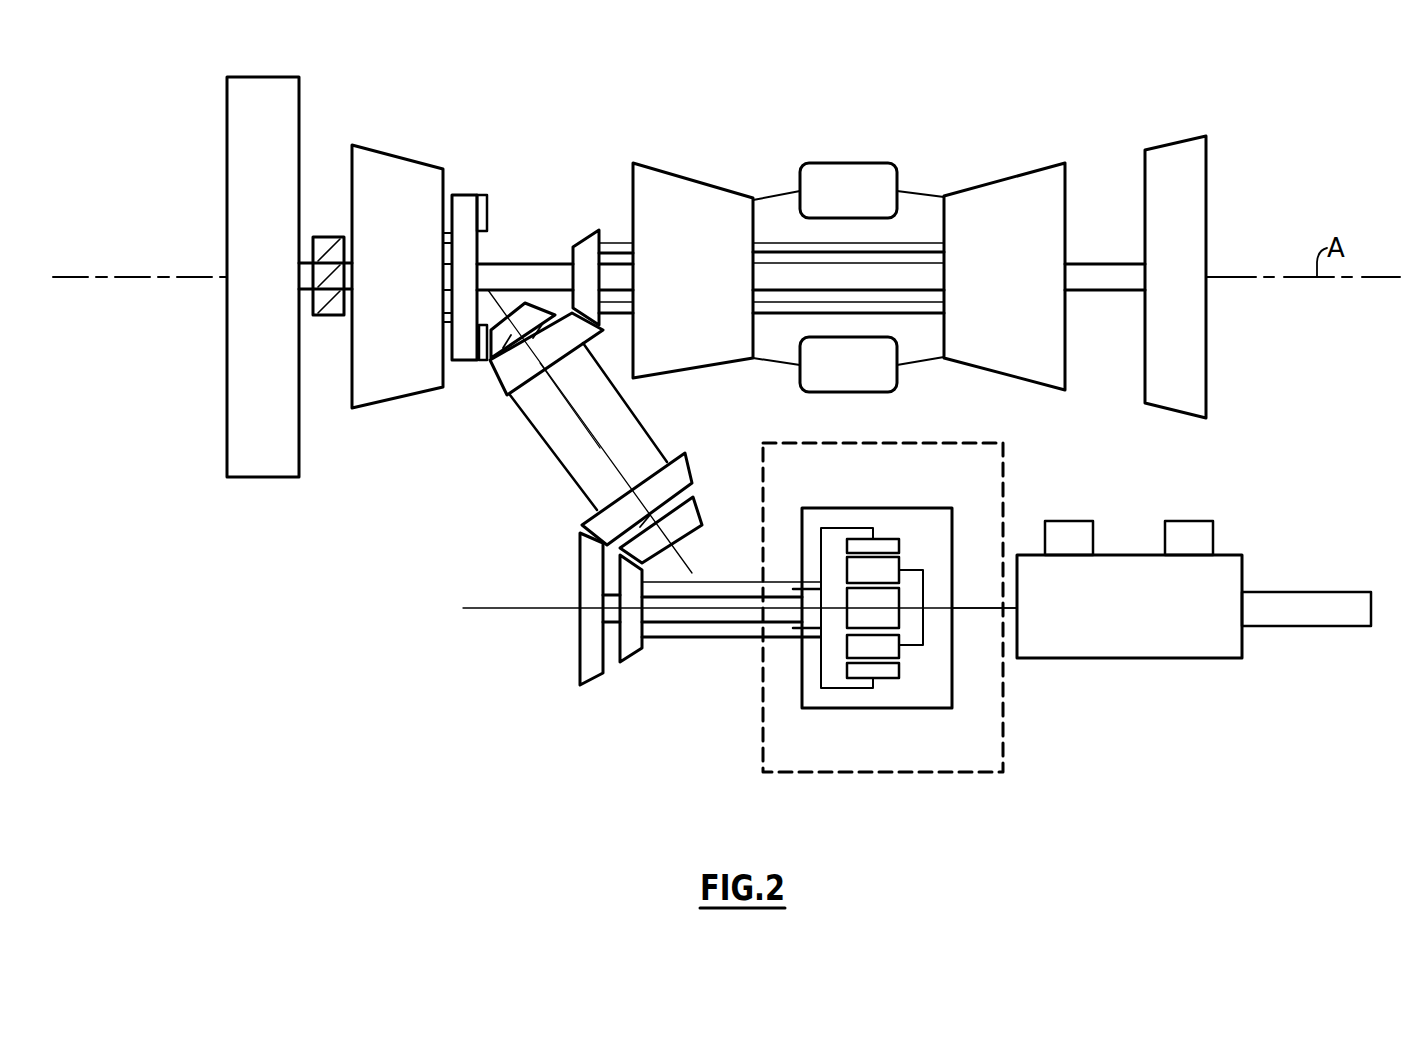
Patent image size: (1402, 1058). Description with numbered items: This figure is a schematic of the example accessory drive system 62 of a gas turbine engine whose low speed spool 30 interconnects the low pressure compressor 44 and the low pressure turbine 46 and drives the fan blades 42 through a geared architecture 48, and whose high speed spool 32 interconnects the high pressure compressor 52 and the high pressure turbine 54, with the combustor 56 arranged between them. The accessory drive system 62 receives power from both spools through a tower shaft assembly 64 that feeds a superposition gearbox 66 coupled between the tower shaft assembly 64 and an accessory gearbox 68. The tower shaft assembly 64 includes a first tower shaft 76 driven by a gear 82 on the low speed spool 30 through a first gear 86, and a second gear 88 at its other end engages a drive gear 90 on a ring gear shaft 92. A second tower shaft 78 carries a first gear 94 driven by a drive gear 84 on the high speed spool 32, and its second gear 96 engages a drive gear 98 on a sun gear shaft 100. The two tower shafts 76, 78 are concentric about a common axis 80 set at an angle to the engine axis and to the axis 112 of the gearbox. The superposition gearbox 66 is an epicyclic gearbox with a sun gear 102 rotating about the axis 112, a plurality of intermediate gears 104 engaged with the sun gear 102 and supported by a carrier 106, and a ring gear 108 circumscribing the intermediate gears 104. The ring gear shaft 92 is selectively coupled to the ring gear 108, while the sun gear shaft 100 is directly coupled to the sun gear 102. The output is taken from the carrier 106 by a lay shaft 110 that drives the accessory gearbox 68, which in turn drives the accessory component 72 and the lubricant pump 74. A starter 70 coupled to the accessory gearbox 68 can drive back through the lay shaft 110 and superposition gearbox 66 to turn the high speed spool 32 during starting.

The low speed spool 30 is at (508, 270).
The high speed spool 32 is at (787, 315).
The fan blades 42 is at (269, 87).
The low pressure compressor 44 is at (392, 163).
The low pressure turbine 46 is at (1172, 150).
The geared architecture 48 is at (326, 236).
The high pressure compressor 52 is at (675, 186).
The high pressure turbine 54 is at (994, 190).
The combustor 56 is at (837, 170).
The accessory drive system 62 is at (625, 734).
The tower shaft assembly 64 is at (452, 521).
The superposition gearbox 66 is at (839, 716).
The accessory gearbox 68 is at (1145, 647).
The starter 70 is at (1293, 613).
The accessory component 72 is at (1193, 533).
The lubricant pump 74 is at (1072, 533).
The first tower shaft 76 is at (494, 373).
The second tower shaft 78 is at (567, 453).
The common axis 80 is at (612, 453).
The gear 82 is at (460, 202).
The drive gear 84 is at (582, 247).
The first gear 86 is at (480, 362).
The second gear 88 is at (693, 512).
The drive gear 90 is at (630, 643).
The ring gear shaft 92 is at (725, 628).
The first gear 94 is at (506, 382).
The second gear 96 is at (607, 524).
The drive gear 98 is at (587, 650).
The sun gear shaft 100 is at (814, 607).
The sun gear 102 is at (887, 602).
The intermediate gears 104 is at (890, 650).
The carrier 106 is at (927, 597).
The ring gear 108 is at (885, 675).
The lay shaft 110 is at (977, 612).
The axis 112 is at (487, 612).